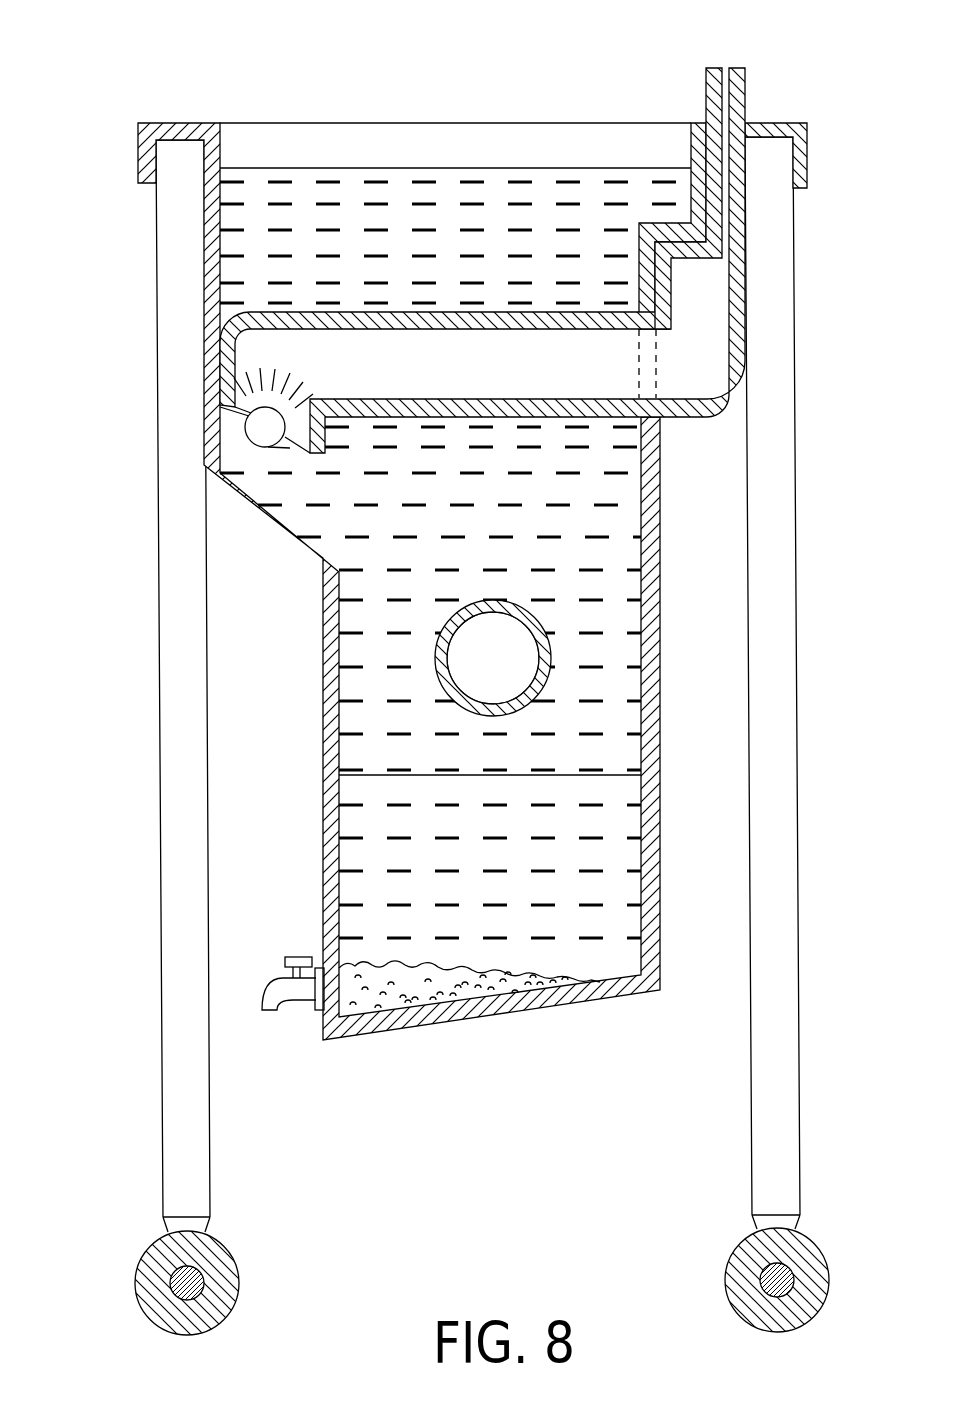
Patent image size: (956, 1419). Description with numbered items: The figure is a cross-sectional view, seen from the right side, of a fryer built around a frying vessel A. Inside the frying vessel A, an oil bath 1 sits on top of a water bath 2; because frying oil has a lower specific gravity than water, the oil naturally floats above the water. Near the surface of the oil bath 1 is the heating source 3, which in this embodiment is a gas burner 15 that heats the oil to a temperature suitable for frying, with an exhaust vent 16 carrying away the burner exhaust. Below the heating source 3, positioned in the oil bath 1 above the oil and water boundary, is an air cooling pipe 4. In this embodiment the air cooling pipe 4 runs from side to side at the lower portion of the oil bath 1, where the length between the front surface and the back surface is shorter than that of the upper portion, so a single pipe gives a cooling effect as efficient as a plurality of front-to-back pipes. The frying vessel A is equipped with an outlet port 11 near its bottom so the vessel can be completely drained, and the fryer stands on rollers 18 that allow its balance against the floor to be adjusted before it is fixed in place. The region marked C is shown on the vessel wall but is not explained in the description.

The oil bath 1 is at (258, 250).
The water bath 2 is at (363, 905).
The heating source 3 is at (257, 350).
The air cooling pipe 4 is at (467, 672).
The outlet port 11 is at (277, 1003).
The gas burner 15 is at (247, 427).
The exhaust vent 16 is at (725, 68).
The rollers 18 is at (225, 1288).
The frying vessel A is at (657, 652).
The tank casing wall C is at (278, 540).